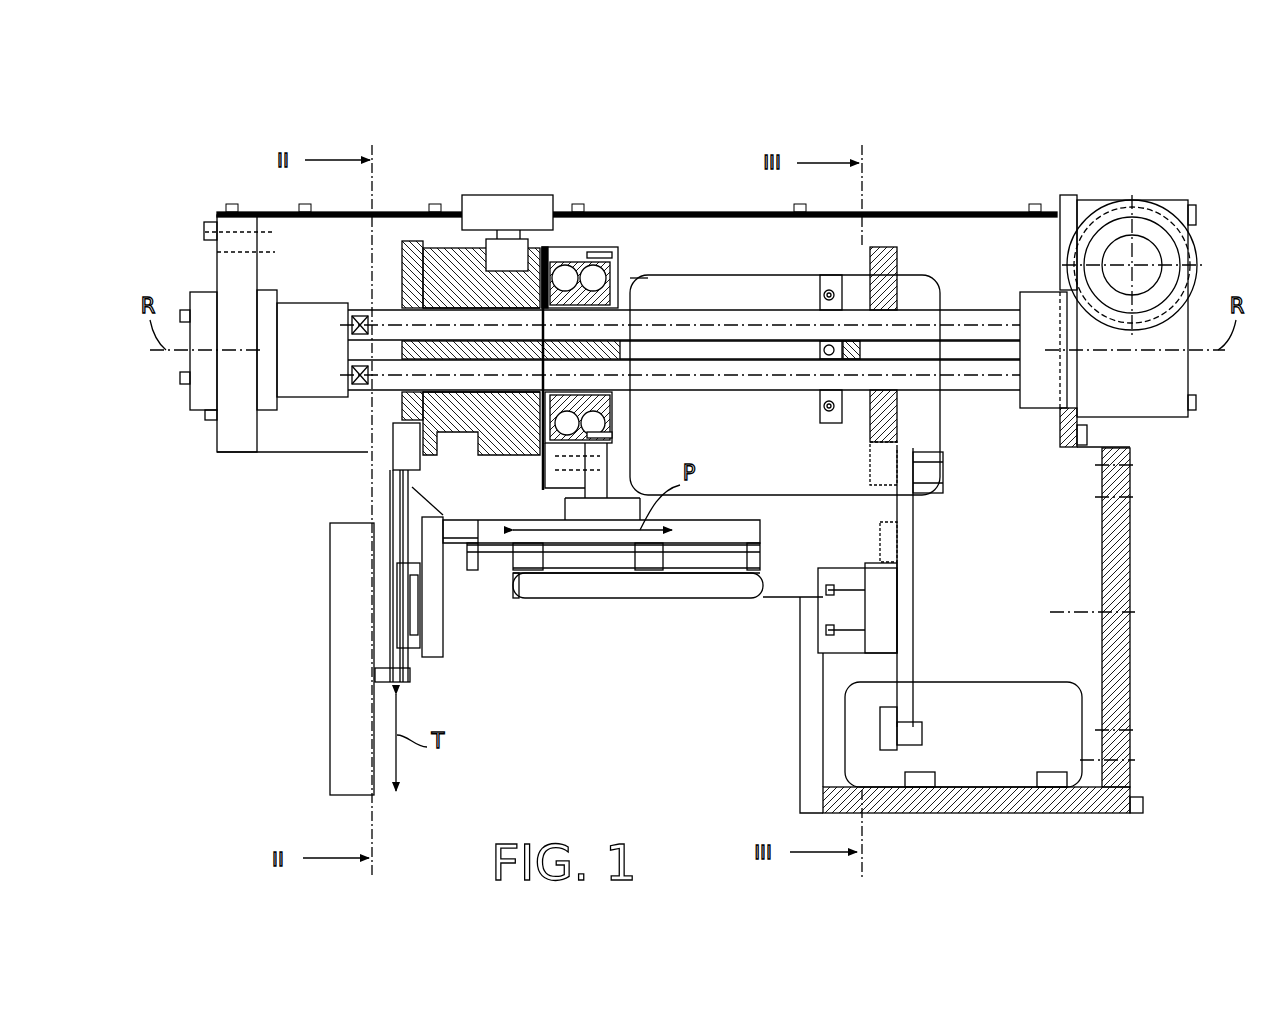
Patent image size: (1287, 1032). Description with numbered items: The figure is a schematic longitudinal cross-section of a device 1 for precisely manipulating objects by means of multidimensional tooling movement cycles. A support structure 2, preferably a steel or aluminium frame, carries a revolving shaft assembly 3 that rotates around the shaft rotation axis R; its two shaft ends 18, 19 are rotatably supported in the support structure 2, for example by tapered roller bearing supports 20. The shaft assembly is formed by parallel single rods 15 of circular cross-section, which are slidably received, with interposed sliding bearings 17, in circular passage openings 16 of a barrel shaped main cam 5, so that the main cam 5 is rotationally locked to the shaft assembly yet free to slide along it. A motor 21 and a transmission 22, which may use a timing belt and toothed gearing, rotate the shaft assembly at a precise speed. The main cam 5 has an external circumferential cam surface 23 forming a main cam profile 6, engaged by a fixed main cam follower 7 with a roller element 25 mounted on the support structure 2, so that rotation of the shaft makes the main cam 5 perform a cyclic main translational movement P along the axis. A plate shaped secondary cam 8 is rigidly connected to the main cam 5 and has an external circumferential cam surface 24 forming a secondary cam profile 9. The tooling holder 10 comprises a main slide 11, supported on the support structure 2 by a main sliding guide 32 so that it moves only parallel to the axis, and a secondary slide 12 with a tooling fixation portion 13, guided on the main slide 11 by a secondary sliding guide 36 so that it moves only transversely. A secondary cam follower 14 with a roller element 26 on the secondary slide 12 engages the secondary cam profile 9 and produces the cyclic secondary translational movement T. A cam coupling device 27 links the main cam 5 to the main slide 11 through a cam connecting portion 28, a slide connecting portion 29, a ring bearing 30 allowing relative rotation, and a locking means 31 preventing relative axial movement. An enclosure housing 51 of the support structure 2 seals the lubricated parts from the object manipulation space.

The device 1 is at (984, 196).
The support structure 2 is at (1120, 528).
The revolving shaft assembly 3 is at (972, 310).
The main cam 5 is at (490, 225).
The main cam profile 6 is at (462, 445).
The fixed main cam follower 7 is at (500, 297).
The secondary cam 8 is at (413, 240).
The secondary cam profile 9 is at (448, 263).
The tooling holder 10 is at (327, 645).
The main slide 11 is at (698, 533).
The secondary slide 12 is at (385, 512).
The tooling fixation portion 13 is at (342, 737).
The secondary cam follower 14 is at (403, 440).
The single rods 15 is at (674, 372).
The circular passage openings 16 is at (597, 247).
The sliding bearings 17 is at (570, 247).
The shaft end 18 is at (303, 317).
The shaft end 19 is at (1045, 410).
The tapered roller bearing supports 20 is at (213, 418).
The motor 21 is at (1140, 258).
The transmission 22 is at (1193, 303).
The external circumferential cam surface 23 is at (510, 460).
The external circumferential cam surface 24 is at (445, 248).
The roller element 25 is at (510, 252).
The roller element 26 is at (403, 460).
The cam coupling device 27 is at (668, 275).
The cam connecting portion 28 is at (614, 400).
The slide connecting portion 29 is at (563, 460).
The ring bearing 30 is at (629, 270).
The locking means 31 is at (650, 275).
The main sliding guide 32 is at (530, 555).
The secondary sliding guide 36 is at (410, 660).
The enclosure housing 51 is at (894, 212).